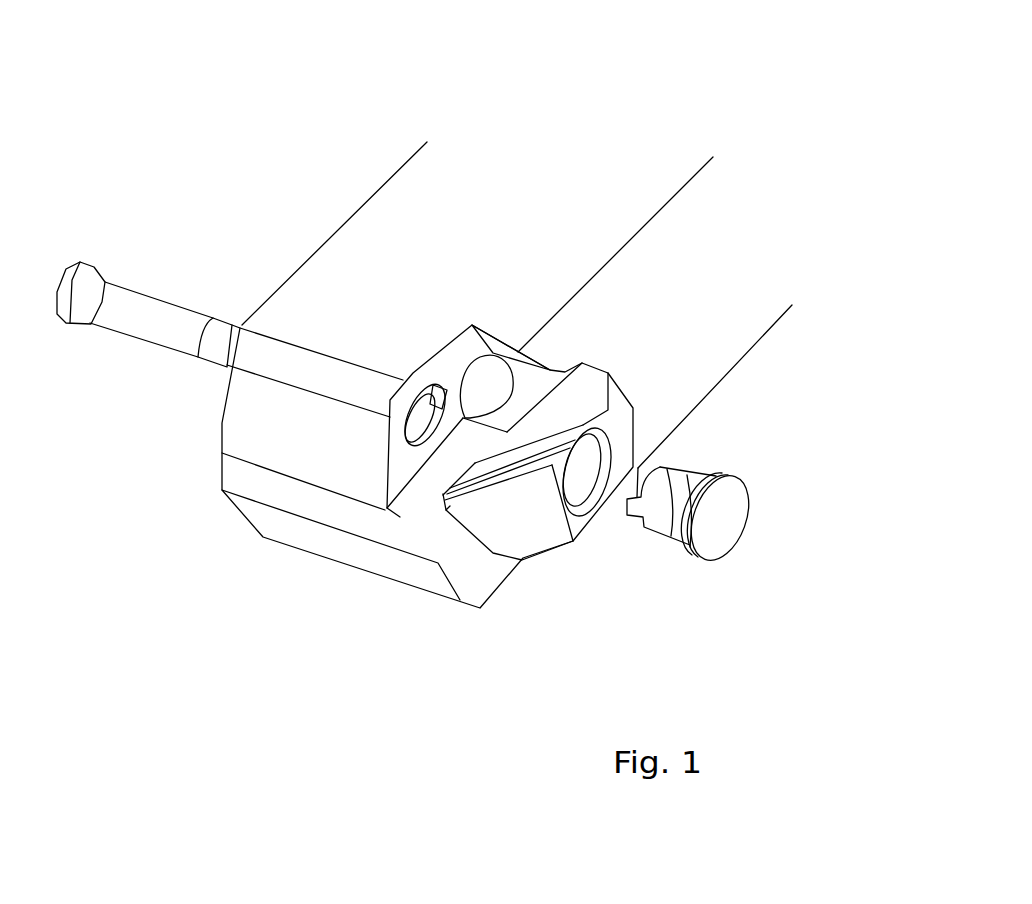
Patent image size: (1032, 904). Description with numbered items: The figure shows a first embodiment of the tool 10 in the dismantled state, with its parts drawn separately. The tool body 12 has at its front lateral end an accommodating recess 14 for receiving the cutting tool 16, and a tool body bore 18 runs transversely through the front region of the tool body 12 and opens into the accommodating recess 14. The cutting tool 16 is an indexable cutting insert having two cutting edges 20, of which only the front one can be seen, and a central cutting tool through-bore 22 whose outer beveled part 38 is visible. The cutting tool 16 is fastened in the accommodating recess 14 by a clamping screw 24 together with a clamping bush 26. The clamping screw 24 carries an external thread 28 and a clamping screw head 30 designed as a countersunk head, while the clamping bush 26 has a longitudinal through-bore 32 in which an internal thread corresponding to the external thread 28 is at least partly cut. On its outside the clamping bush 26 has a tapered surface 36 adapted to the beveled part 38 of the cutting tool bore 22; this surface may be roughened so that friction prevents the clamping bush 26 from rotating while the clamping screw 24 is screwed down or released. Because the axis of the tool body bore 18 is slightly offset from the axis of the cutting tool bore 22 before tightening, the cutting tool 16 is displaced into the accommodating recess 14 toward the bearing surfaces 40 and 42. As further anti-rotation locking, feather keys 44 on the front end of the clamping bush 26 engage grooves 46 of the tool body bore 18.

The tool 10 is at (323, 148).
The tool body 12 is at (312, 290).
The accommodating recess 14 is at (428, 488).
The cutting tool 16 is at (529, 541).
The tool body bore 18 is at (405, 451).
The cutting edges 20 is at (451, 505).
The cutting tool through-bore 22 is at (572, 480).
The clamping screw 24 is at (145, 294).
The clamping bush 26 is at (727, 467).
The external thread 28 is at (214, 352).
The clamping screw head 30 is at (80, 315).
The longitudinal through-bore 32 is at (723, 532).
The tapered surface 36 is at (677, 532).
The beveled part 38 is at (583, 510).
The bearing surface 40 is at (527, 342).
The bearing surface 42 is at (430, 505).
The feather keys 44 is at (645, 458).
The grooves 46 is at (446, 386).